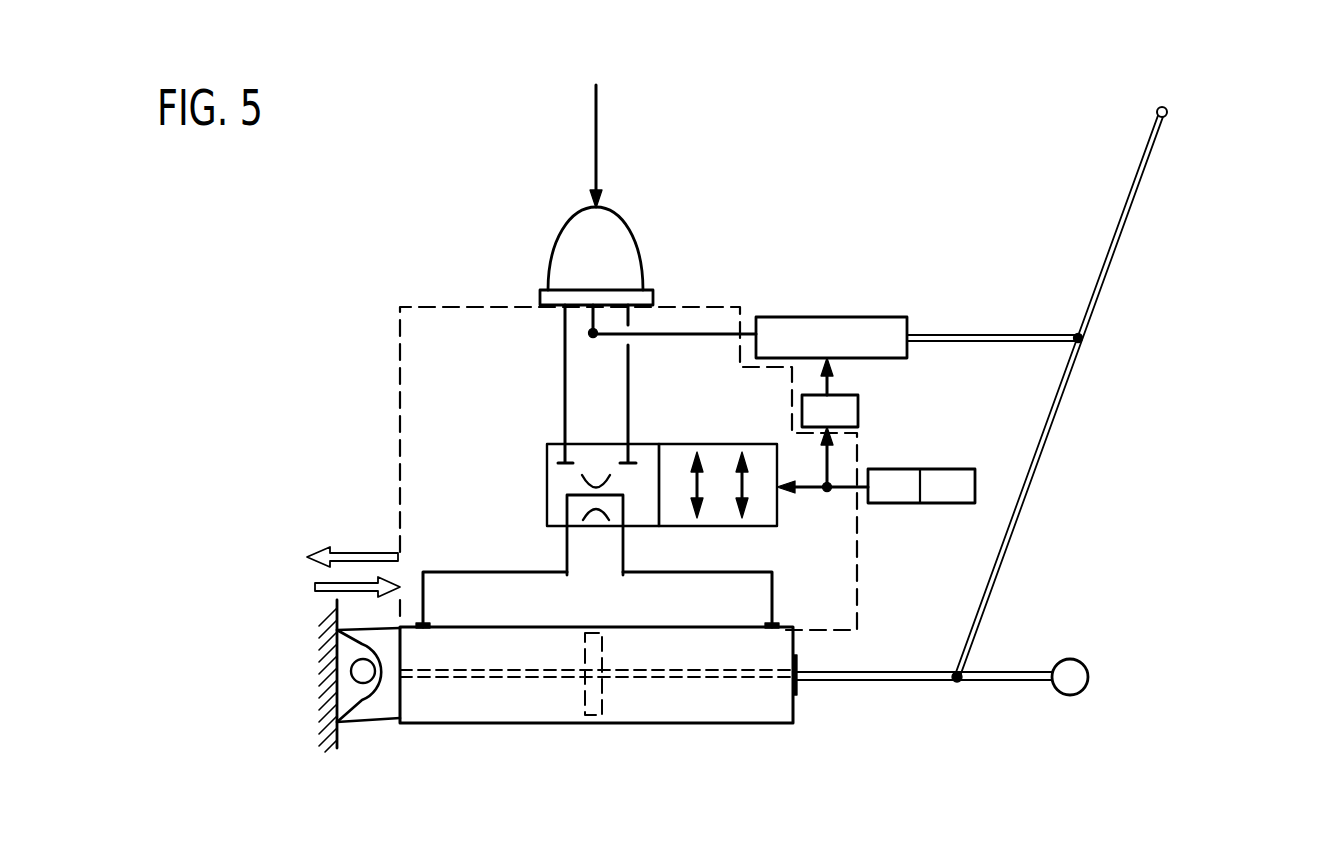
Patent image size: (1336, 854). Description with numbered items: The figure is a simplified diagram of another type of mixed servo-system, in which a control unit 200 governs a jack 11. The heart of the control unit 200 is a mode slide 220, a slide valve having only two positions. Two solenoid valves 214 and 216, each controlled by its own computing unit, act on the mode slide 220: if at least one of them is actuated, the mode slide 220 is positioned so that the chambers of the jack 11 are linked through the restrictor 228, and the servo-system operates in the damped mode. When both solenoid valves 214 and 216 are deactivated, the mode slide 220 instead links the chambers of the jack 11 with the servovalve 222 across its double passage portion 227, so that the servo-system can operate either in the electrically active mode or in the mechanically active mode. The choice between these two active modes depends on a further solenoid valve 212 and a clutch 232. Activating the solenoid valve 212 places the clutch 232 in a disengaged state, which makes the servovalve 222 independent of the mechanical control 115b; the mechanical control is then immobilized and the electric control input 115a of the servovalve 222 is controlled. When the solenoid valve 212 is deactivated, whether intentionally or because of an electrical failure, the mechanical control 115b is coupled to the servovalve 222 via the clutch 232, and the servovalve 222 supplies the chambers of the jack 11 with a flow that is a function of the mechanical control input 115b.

The jack 11 is at (663, 723).
The electric control input 115a is at (541, 250).
The mechanical control 115b is at (1157, 150).
The control unit 200 is at (400, 330).
The solenoid valve 212 is at (837, 415).
The solenoid valve 214 is at (900, 493).
The solenoid valve 216 is at (957, 485).
The mode slide 220 is at (542, 445).
The servovalve 222 is at (613, 237).
The double passage portion 227 is at (720, 463).
The restrictor 228 is at (582, 483).
The clutch 232 is at (863, 325).